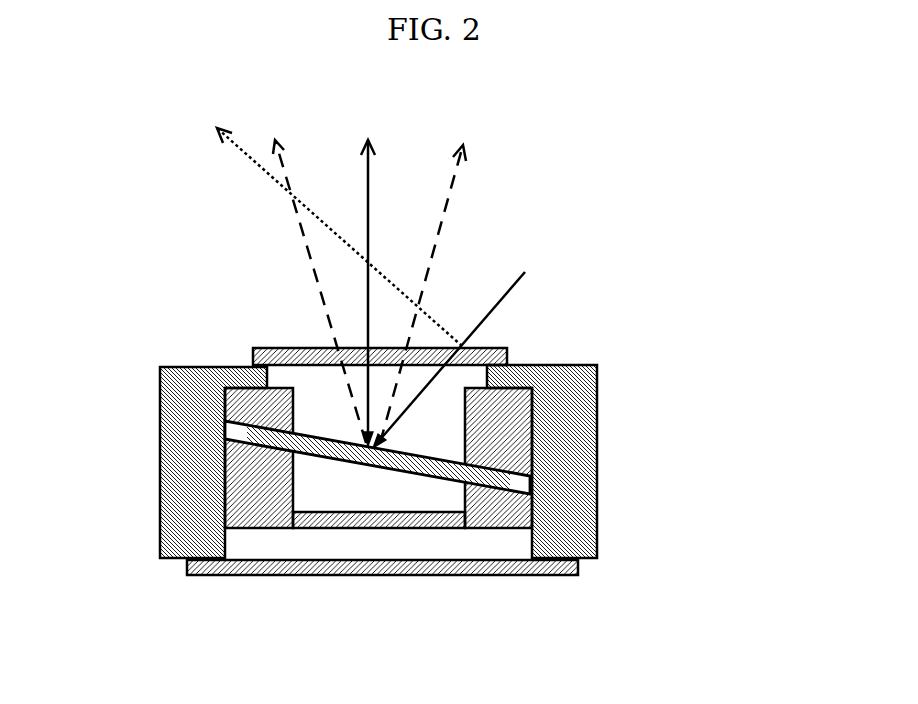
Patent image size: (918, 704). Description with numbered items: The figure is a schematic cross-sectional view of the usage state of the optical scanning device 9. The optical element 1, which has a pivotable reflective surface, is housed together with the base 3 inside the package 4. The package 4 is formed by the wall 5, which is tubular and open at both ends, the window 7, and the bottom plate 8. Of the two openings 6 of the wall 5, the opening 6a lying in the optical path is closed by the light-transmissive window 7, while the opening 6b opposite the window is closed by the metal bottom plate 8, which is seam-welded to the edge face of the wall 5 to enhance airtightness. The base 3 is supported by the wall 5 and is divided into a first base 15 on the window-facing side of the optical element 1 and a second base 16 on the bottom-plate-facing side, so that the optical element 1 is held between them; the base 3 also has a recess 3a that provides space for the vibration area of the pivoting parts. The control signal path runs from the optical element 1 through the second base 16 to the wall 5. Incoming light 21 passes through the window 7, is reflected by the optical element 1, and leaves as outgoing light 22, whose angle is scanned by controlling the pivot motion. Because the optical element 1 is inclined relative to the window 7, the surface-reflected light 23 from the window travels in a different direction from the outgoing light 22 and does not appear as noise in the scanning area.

The optical element 1 is at (450, 473).
The base 3 is at (285, 458).
The recess 3a is at (352, 430).
The package 4 is at (449, 455).
The wall 5 is at (563, 443).
The openings 6 is at (253, 538).
The opening 6a is at (313, 378).
The opening 6b is at (320, 543).
The window 7 is at (508, 347).
The bottom plate 8 is at (578, 570).
The optical scanning device 9 is at (619, 257).
The first base 15 is at (245, 414).
The second base 16 is at (252, 485).
The incoming light 21 is at (500, 297).
The outgoing light 22 is at (285, 168).
The surface-reflected light 23 is at (340, 233).